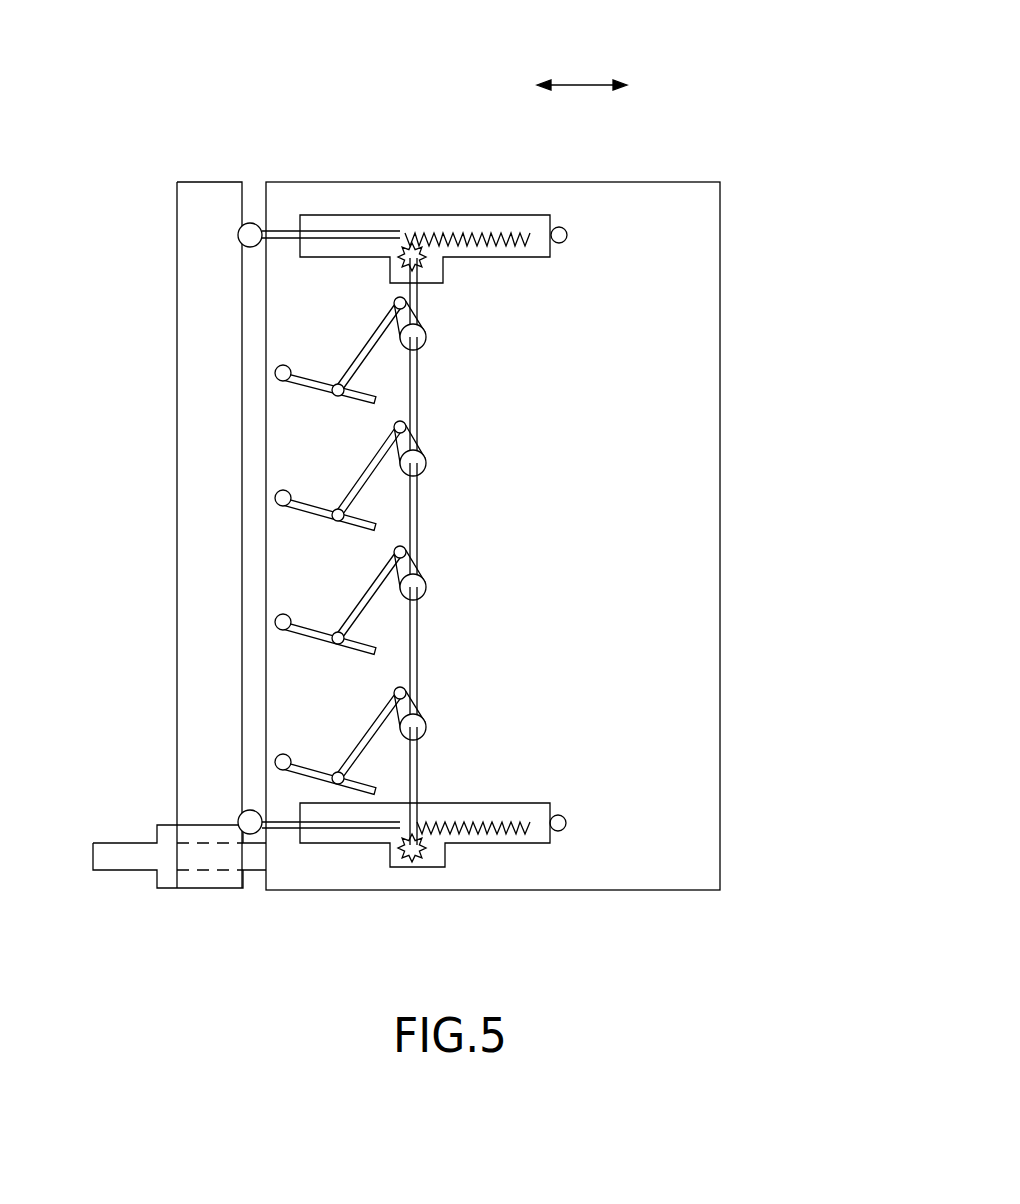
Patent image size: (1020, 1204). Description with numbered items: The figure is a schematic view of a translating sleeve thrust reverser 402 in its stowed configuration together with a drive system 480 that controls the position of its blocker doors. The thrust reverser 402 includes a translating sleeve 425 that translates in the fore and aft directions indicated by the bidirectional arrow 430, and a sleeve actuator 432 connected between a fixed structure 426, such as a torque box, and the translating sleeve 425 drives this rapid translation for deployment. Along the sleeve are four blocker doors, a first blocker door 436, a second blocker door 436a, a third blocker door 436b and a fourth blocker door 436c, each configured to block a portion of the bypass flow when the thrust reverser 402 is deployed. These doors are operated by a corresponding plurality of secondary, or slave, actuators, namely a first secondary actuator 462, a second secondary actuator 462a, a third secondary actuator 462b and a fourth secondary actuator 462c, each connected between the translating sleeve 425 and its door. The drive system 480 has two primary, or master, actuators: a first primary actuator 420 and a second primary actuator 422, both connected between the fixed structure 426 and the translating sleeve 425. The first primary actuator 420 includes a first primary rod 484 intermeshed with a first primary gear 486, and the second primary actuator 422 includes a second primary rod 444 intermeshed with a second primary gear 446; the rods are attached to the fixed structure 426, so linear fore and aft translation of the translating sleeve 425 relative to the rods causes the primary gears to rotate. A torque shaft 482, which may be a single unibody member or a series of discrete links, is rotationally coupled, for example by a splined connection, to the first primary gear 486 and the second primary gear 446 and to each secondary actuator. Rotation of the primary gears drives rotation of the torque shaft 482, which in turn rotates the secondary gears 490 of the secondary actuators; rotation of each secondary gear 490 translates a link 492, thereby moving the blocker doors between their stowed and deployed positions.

The thrust reverser 402 is at (332, 133).
The first primary actuator 420 is at (409, 200).
The second primary actuator 422 is at (492, 867).
The translating sleeve 425 is at (703, 348).
The fixed structure 426 is at (225, 541).
The bidirectional arrow 430 is at (585, 84).
The sleeve actuator 432 is at (134, 877).
The blocker door 436 is at (300, 768).
The second blocker door 436a is at (305, 628).
The third blocker door 436b is at (297, 512).
The fourth blocker door 436c is at (297, 387).
The second primary rod 444 is at (340, 838).
The second primary gear 446 is at (413, 870).
The secondary actuator 462 is at (474, 720).
The second secondary actuator 462a is at (466, 583).
The third secondary actuator 462b is at (453, 480).
The fourth secondary actuator 462c is at (464, 344).
The drive system 480 is at (592, 307).
The torque shaft 482 is at (420, 645).
The first primary rod 484 is at (288, 233).
The first primary gear 486 is at (396, 262).
The secondary gear 490 is at (426, 727).
The link 492 is at (377, 717).